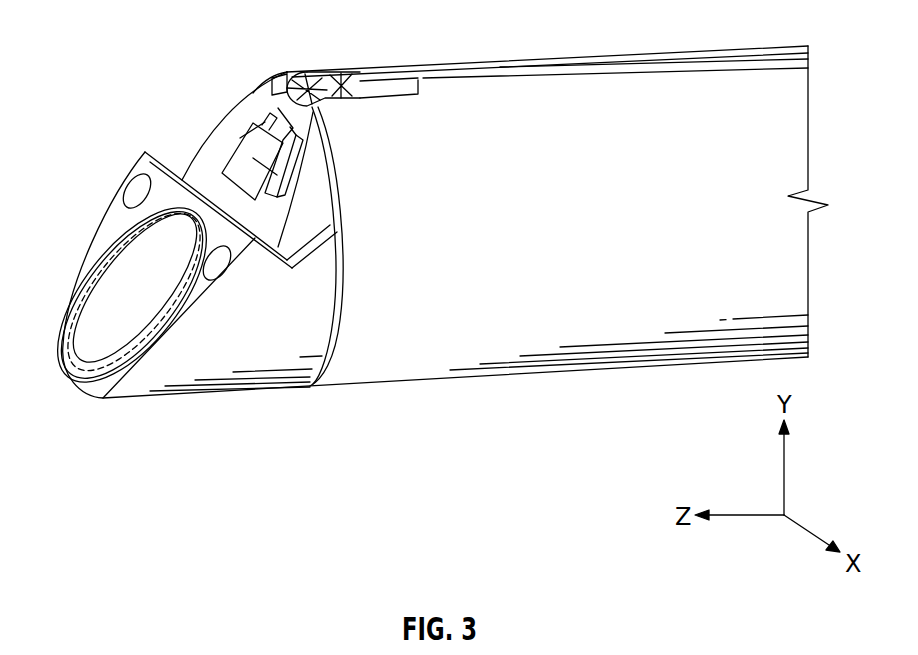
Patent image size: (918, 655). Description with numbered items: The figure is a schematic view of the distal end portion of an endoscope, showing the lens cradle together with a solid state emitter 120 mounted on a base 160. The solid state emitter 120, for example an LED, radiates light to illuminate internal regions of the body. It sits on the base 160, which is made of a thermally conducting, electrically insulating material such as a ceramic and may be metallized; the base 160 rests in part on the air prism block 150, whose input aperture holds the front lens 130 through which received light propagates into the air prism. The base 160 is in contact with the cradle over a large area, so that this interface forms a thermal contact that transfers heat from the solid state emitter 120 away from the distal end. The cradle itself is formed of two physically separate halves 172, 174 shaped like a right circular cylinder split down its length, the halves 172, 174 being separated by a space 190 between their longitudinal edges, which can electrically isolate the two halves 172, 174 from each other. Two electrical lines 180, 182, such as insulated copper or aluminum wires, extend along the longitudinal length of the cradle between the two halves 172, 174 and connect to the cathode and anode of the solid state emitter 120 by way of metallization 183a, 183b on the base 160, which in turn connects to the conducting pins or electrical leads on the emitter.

The solid state emitter 120 is at (243, 150).
The front lens 130 is at (120, 293).
The air prism block 150 is at (256, 257).
The base 160 is at (323, 210).
The half of the cradle 172 is at (287, 72).
The half of the cradle 174 is at (748, 178).
The electrical line 180 is at (360, 72).
The electrical line 182 is at (405, 80).
The metallization 183a is at (278, 108).
The metallization 183b is at (297, 157).
The space 190 is at (812, 62).